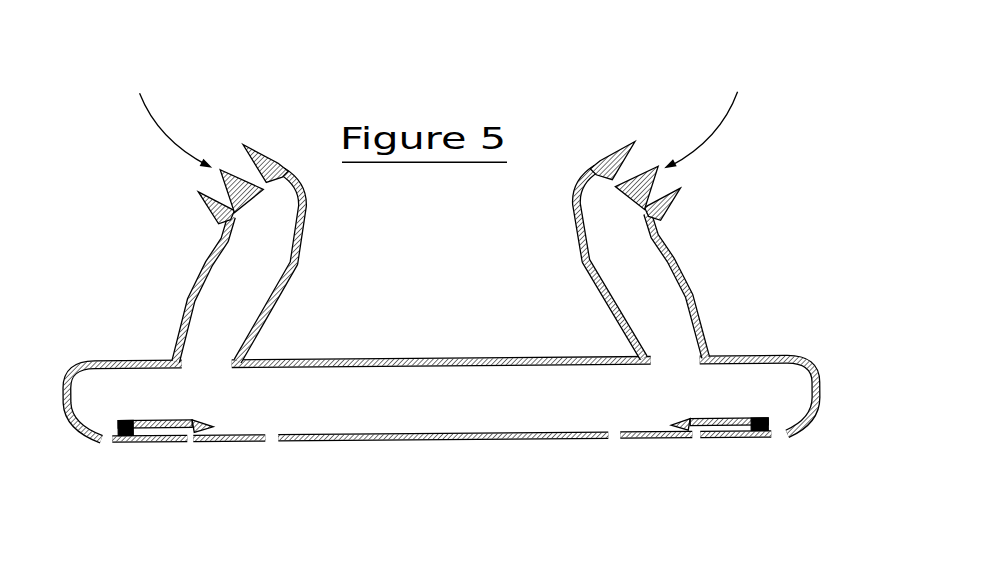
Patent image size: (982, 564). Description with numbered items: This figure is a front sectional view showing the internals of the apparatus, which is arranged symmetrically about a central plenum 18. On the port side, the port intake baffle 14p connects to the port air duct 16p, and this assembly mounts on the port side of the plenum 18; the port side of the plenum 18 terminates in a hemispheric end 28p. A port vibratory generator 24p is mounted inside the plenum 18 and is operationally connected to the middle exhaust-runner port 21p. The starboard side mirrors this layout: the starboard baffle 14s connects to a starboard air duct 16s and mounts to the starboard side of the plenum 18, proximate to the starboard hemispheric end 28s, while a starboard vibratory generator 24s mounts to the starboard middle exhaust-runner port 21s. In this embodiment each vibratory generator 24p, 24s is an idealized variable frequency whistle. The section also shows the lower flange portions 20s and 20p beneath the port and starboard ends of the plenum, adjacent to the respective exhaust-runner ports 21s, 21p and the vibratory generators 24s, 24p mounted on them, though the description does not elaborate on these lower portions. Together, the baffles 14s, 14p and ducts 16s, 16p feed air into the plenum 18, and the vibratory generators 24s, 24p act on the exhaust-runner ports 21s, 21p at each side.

The starboard intake baffle 14s is at (200, 188).
The port intake baffle 14p is at (678, 190).
The starboard air duct 16s is at (297, 261).
The port air duct 16p is at (590, 274).
The plenum 18 is at (424, 357).
The starboard bottom flange 20s is at (110, 444).
The port bottom flange 20p is at (777, 448).
The starboard middle exhaust-runner port 21s is at (188, 439).
The port middle exhaust-runner port 21p is at (697, 440).
The starboard vibratory generator 24s is at (155, 415).
The port vibratory generator 24p is at (722, 419).
The starboard hemispheric end 28s is at (70, 367).
The port hemispheric end 28p is at (817, 378).